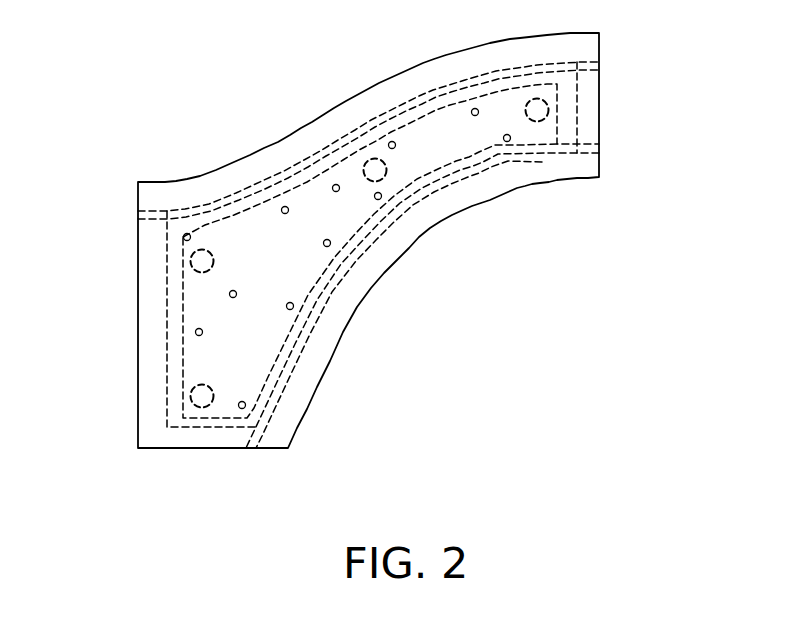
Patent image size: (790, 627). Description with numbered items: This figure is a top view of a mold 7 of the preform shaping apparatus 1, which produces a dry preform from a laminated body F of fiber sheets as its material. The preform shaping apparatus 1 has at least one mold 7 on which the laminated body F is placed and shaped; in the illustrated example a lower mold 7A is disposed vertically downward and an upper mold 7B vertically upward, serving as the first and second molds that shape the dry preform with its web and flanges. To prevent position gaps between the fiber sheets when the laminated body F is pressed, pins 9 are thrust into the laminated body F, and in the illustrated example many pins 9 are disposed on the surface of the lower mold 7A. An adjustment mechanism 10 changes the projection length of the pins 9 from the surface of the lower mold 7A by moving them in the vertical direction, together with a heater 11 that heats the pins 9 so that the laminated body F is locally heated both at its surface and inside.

The preform shaping apparatus 1 is at (152, 97).
The mold 7 is at (428, 251).
The lower mold 7A is at (668, 63).
The upper mold 7B is at (599, 55).
The pins 9 is at (507, 144).
The adjustment mechanism 10 is at (537, 122).
The heater 11 is at (183, 358).
The laminated body of fiber sheets F is at (167, 283).